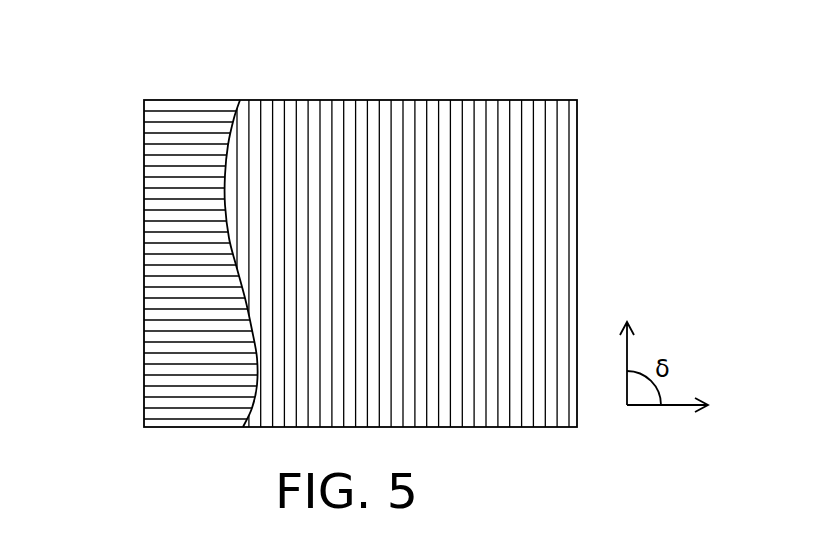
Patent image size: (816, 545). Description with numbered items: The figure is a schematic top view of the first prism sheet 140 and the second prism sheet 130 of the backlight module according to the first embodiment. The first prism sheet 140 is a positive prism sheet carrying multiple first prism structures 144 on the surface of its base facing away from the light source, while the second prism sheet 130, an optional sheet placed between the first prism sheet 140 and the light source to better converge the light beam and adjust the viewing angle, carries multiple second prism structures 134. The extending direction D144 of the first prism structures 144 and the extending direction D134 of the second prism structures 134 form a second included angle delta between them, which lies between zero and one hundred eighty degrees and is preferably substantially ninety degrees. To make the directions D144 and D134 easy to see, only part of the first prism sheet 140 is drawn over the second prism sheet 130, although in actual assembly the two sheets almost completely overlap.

The second prism sheet 130 is at (144, 308).
The second prism structures 134 is at (173, 361).
The first prism sheet 140 is at (223, 133).
The first prism structures 144 is at (308, 165).
The extending direction of the first prism structures D144 is at (625, 349).
The extending direction of the second prism structures D134 is at (695, 405).